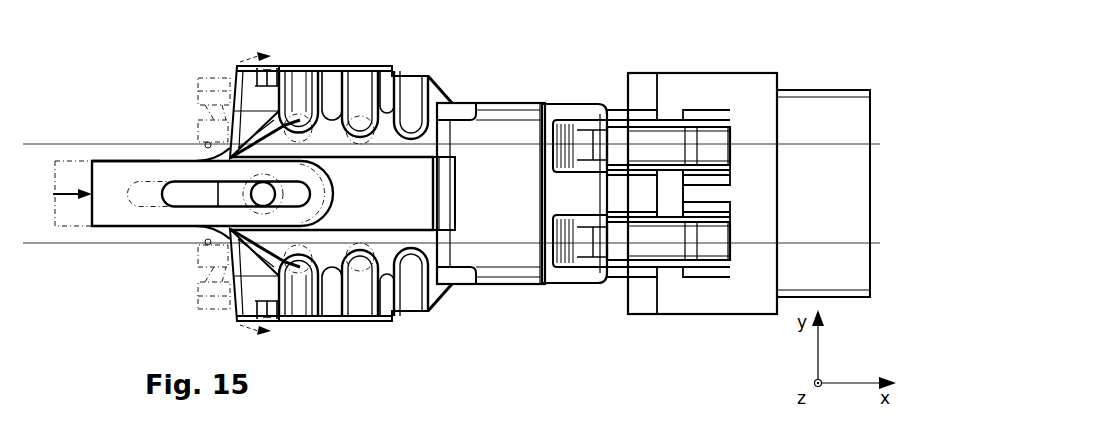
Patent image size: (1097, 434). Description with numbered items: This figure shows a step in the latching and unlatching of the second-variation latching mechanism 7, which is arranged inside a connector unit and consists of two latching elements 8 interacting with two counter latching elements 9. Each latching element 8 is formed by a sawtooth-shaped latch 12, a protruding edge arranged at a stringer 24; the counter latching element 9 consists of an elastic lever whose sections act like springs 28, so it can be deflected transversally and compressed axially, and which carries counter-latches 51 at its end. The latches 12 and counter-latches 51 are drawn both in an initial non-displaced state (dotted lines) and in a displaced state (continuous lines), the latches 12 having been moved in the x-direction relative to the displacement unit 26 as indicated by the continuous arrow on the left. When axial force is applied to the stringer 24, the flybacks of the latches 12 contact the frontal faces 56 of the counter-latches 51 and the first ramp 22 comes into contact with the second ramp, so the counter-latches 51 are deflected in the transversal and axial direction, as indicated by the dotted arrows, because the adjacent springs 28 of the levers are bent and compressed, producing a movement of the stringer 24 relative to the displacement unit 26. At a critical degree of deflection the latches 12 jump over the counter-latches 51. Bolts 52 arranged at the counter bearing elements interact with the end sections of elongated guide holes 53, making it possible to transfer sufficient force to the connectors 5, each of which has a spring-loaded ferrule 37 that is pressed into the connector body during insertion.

The connector 5 is at (625, 93).
The latching mechanism 7 is at (246, 254).
The latching element 8 is at (106, 240).
The counter latching element 9 is at (458, 97).
The latch 12 is at (200, 193).
The first ramp 22 is at (300, 135).
The stringer 24 is at (152, 163).
The displacement unit 26 is at (477, 173).
The spring 28 is at (432, 62).
The ferrule 37 is at (763, 233).
The counter-latch 51 is at (243, 110).
The bolt 52 is at (452, 97).
The elongated guide hole 53 is at (152, 170).
The frontal face 56 is at (229, 158).